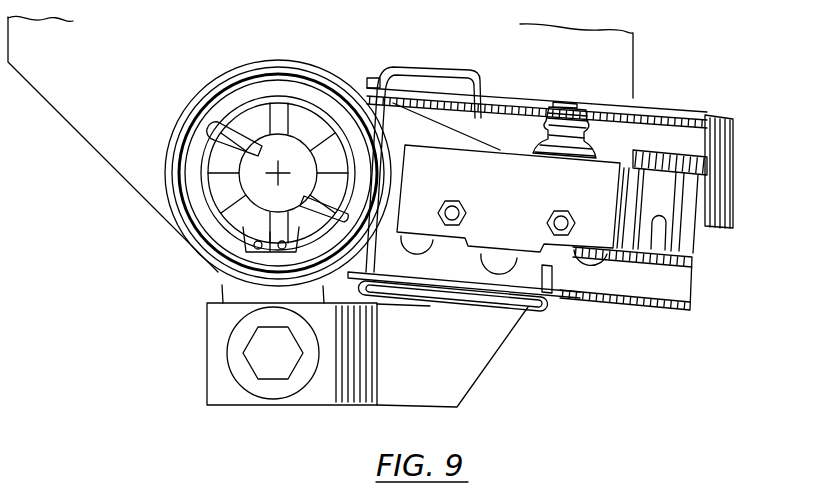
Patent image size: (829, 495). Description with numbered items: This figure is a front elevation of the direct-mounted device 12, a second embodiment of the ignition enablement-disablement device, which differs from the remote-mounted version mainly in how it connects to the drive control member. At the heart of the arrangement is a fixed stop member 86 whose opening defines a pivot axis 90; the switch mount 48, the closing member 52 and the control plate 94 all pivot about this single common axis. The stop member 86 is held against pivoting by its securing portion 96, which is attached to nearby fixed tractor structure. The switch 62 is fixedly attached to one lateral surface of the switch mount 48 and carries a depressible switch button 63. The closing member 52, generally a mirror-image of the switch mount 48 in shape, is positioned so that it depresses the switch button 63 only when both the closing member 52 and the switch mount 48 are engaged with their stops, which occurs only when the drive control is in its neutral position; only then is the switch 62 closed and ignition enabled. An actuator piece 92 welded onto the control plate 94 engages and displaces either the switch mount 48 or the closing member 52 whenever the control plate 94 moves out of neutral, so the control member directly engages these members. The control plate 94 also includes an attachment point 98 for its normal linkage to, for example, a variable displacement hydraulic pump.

The direct-mounted device 12 is at (124, 288).
The switch mount 48 is at (620, 283).
The closing member 52 is at (518, 118).
The switch 62 is at (508, 209).
The switch button 63 is at (556, 110).
The stop member 86 is at (468, 375).
The pivot axis 90 is at (281, 176).
The actuator piece 92 is at (690, 242).
The control plate 94 is at (133, 172).
The securing portion 96 is at (320, 388).
The attachment point 98 is at (727, 148).